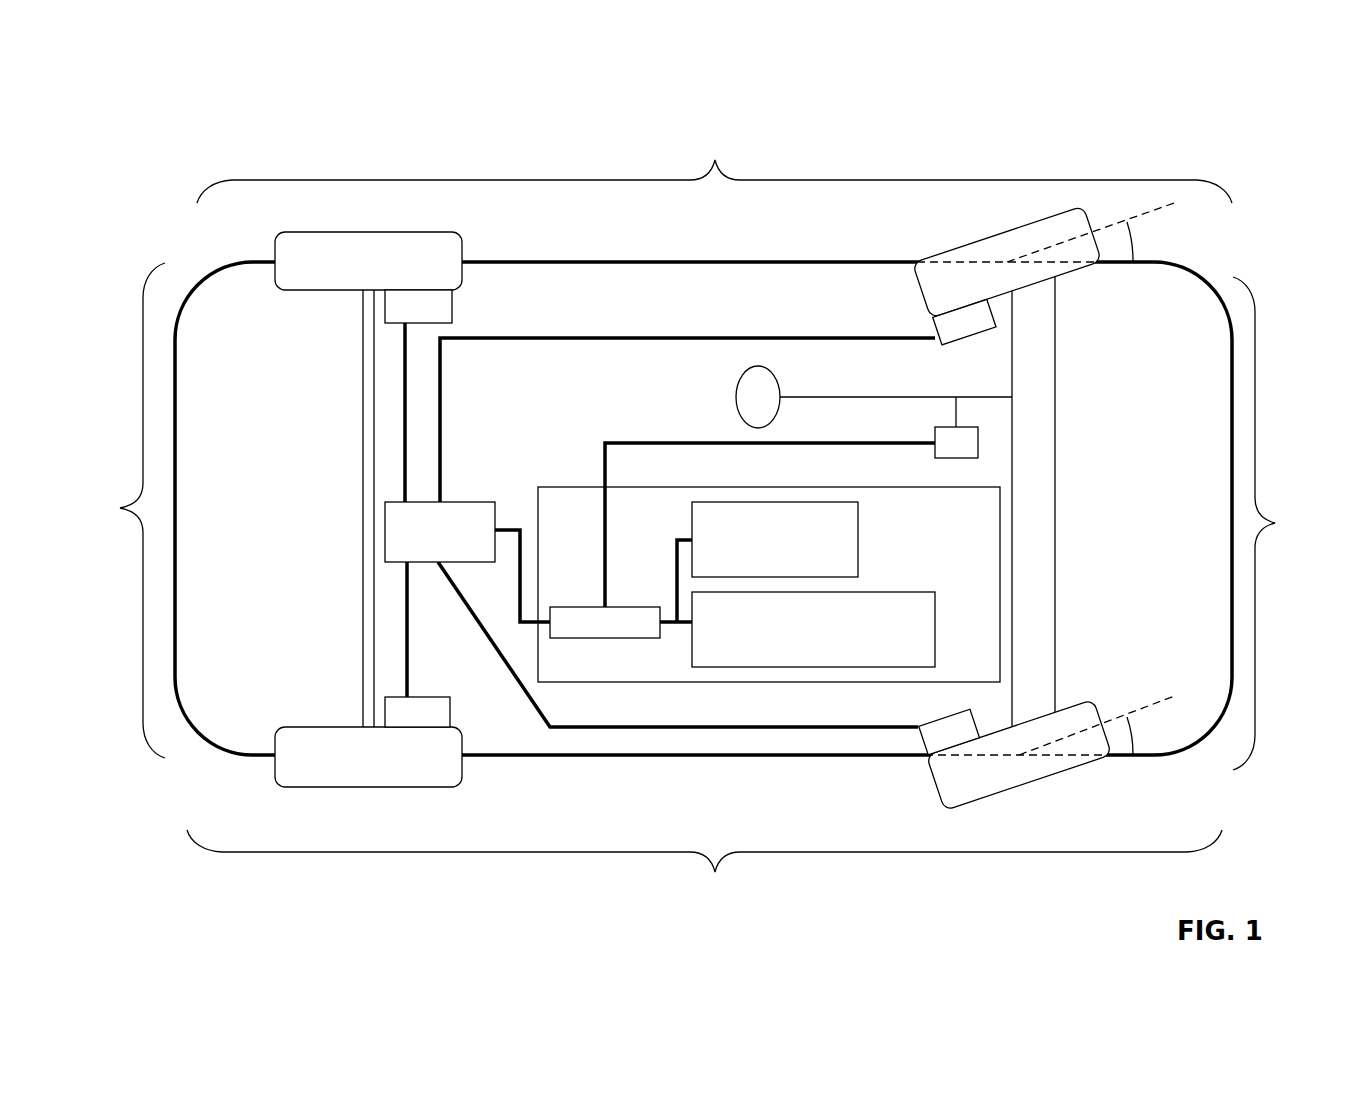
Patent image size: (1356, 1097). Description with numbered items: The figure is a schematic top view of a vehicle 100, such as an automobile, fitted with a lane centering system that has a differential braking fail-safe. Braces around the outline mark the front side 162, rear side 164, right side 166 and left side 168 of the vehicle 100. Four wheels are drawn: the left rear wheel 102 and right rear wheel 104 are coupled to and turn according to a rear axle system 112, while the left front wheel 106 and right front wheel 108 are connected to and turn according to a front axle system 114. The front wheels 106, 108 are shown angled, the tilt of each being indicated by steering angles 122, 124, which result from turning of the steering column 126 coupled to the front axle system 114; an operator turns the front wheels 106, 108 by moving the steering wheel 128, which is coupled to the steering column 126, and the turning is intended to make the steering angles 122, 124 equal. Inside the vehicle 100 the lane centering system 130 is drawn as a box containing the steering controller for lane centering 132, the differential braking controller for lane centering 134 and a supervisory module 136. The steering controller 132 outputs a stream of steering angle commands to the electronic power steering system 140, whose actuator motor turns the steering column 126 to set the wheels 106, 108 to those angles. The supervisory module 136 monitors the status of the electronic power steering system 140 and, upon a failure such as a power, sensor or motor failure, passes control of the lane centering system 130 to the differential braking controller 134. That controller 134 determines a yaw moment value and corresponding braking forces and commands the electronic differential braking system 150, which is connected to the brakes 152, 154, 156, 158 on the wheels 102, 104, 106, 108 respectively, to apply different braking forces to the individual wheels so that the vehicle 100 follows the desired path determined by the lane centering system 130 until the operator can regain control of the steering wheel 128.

The vehicle 100 is at (1240, 105).
The left rear wheel 102 is at (330, 232).
The right rear wheel 104 is at (385, 788).
The left front wheel 106 is at (1012, 230).
The right front wheel 108 is at (965, 803).
The axle system 112 is at (363, 397).
The axle system 114 is at (1057, 337).
The steering angle 122 is at (1143, 233).
The steering angle 124 is at (1140, 722).
The steering column 126 is at (870, 400).
The steering wheel 128 is at (737, 410).
The lane centering system 130 is at (737, 487).
The steering controller for lane centering 132 is at (858, 518).
The differential braking controller for lane centering 134 is at (935, 607).
The supervisory module 136 is at (583, 638).
The electronic power steering system 140 is at (935, 440).
The electronic differential braking system 150 is at (453, 500).
The brake 152 is at (452, 306).
The brake 154 is at (453, 707).
The brake 156 is at (968, 340).
The brake 158 is at (922, 722).
The front side 162 is at (1279, 523).
The rear side 164 is at (119, 510).
The right side 166 is at (704, 878).
The left side 168 is at (714, 152).